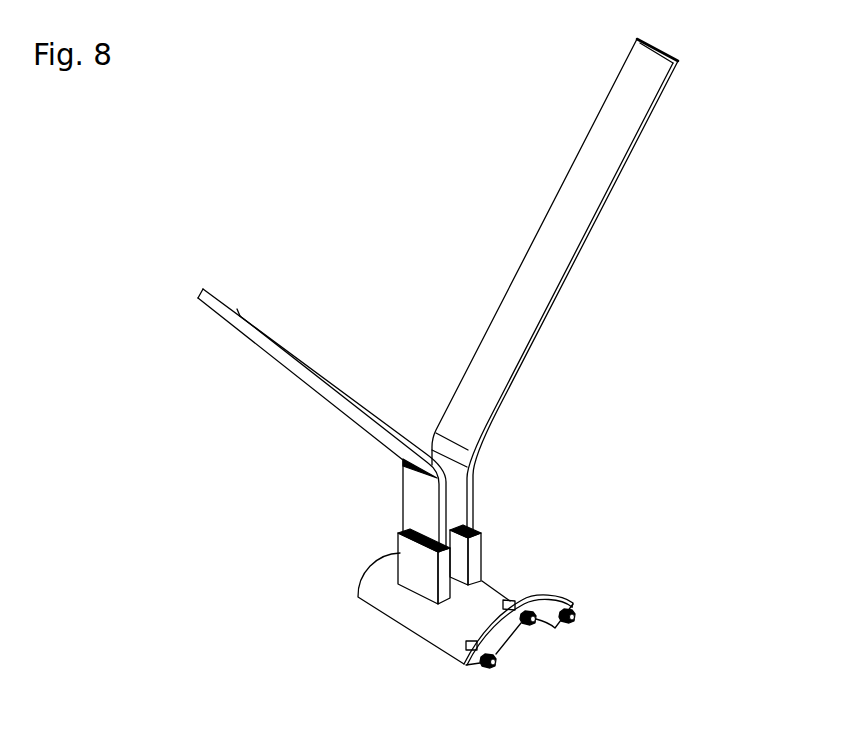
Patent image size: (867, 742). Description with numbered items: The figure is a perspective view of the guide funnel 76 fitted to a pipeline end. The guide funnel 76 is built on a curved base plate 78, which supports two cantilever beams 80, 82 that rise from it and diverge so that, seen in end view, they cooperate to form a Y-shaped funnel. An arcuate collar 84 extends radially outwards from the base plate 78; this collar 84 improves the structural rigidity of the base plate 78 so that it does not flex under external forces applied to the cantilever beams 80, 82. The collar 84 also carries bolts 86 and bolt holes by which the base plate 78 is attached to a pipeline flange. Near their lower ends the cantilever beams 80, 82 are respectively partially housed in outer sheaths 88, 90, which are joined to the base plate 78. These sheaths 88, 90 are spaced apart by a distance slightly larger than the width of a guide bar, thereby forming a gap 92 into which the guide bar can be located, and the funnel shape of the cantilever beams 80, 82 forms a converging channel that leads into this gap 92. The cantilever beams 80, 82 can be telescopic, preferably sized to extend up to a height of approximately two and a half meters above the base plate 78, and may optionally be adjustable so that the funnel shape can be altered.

The guide funnel 76 is at (770, 152).
The curved base plate 78 is at (385, 601).
The cantilever beam 80 is at (267, 328).
The cantilever beam 82 is at (553, 230).
The arcuate collar 84 is at (545, 597).
The bolts 86 is at (576, 617).
The outer sheath 88 is at (402, 552).
The outer sheath 90 is at (480, 552).
The gap 92 is at (419, 414).